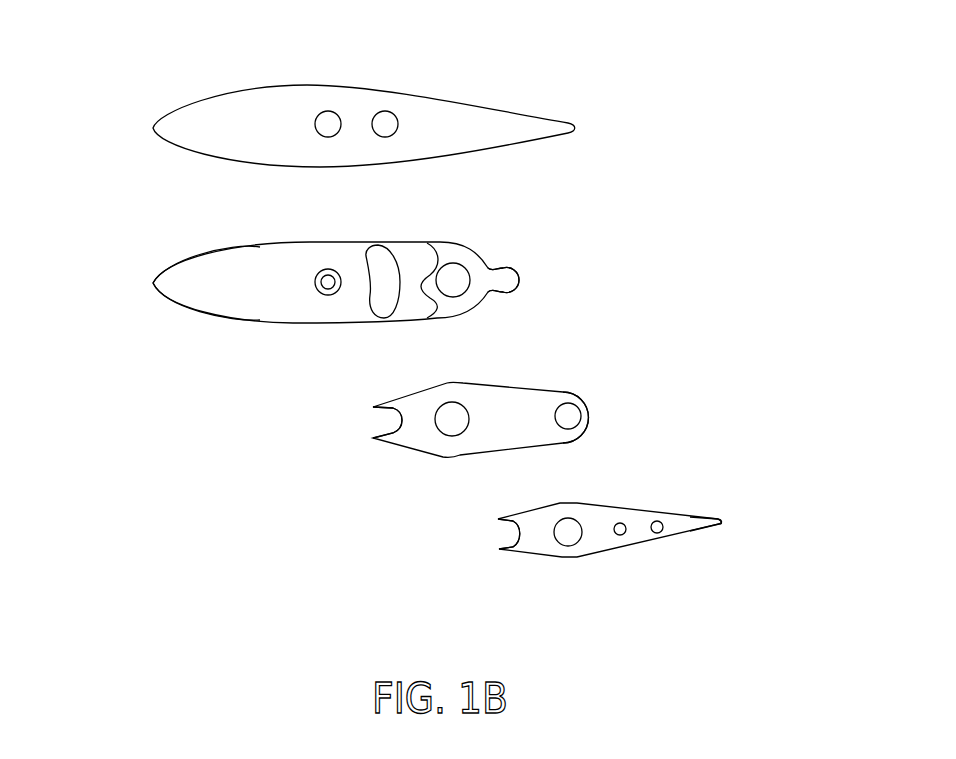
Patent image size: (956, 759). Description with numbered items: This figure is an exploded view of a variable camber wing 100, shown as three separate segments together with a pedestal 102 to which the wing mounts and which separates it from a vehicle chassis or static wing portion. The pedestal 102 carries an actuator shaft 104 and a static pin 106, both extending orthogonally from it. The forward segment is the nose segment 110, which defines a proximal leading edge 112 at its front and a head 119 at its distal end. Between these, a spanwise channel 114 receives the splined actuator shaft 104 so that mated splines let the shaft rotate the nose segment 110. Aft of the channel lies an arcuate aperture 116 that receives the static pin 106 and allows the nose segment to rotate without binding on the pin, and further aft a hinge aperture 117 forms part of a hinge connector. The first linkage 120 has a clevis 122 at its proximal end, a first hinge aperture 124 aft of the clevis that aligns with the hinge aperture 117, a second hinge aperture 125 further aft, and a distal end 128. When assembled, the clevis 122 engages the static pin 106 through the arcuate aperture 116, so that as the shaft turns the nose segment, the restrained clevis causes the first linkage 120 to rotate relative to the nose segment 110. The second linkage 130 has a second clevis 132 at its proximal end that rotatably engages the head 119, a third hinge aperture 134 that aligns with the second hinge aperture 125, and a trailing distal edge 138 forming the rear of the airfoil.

The variable camber wing 100 is at (729, 111).
The pedestal 102 is at (467, 128).
The actuator shaft 104 is at (330, 124).
The static pin 106 is at (385, 124).
The nose segment 110 is at (290, 242).
The leading edge 112 is at (151, 283).
The channel 114 is at (328, 284).
The arcuate aperture 116 is at (383, 258).
The hinge aperture 117 is at (457, 278).
The head 119 is at (507, 270).
The first linkage 120 is at (507, 385).
The clevis 122 is at (392, 447).
The first hinge aperture 124 is at (452, 423).
The second hinge aperture 125 is at (568, 417).
The distal end 128 is at (597, 422).
The second linkage 130 is at (633, 507).
The second clevis 132 is at (507, 552).
The third hinge aperture 134 is at (570, 534).
The trailing distal edge 138 is at (720, 522).